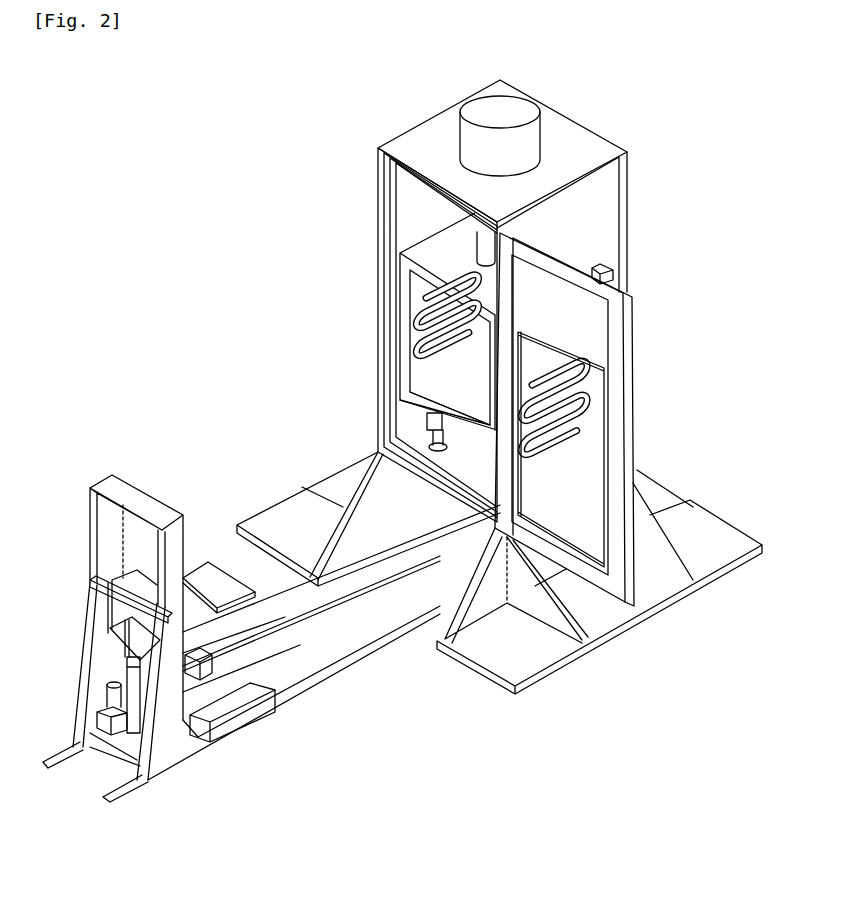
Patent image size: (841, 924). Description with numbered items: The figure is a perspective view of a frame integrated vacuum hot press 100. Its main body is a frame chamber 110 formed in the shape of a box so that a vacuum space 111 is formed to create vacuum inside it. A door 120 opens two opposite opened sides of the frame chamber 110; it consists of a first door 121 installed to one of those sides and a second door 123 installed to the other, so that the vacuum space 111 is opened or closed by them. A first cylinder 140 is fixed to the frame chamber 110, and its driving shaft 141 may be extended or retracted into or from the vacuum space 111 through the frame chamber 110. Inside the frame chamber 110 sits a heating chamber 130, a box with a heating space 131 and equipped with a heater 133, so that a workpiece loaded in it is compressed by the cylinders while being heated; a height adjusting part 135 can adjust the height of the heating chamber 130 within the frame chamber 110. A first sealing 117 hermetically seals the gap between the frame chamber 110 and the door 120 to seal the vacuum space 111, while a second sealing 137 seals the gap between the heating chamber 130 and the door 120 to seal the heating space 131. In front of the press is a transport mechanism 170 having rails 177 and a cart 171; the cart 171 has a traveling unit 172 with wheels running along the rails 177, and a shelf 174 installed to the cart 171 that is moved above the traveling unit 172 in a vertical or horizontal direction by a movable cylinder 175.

The frame integrated vacuum hot press 100 is at (178, 192).
The frame chamber 110 is at (403, 141).
The vacuum space 111 is at (433, 218).
The first sealing 117 is at (388, 183).
The door 120 is at (626, 419).
The first door 121 is at (632, 332).
The second door 123 is at (622, 272).
The heating chamber 130 is at (437, 258).
The heating space 131 is at (468, 376).
The heater 133 is at (440, 360).
The height adjusting part 135 is at (440, 447).
The second sealing 137 is at (403, 303).
The first cylinder 140 is at (490, 118).
The driving shaft 141 is at (480, 247).
The transport mechanism 170 is at (235, 686).
The cart 171 is at (162, 769).
The traveling unit 172 is at (222, 727).
The shelf 174 is at (210, 585).
The movable cylinder 175 is at (128, 673).
The rails 177 is at (295, 623).